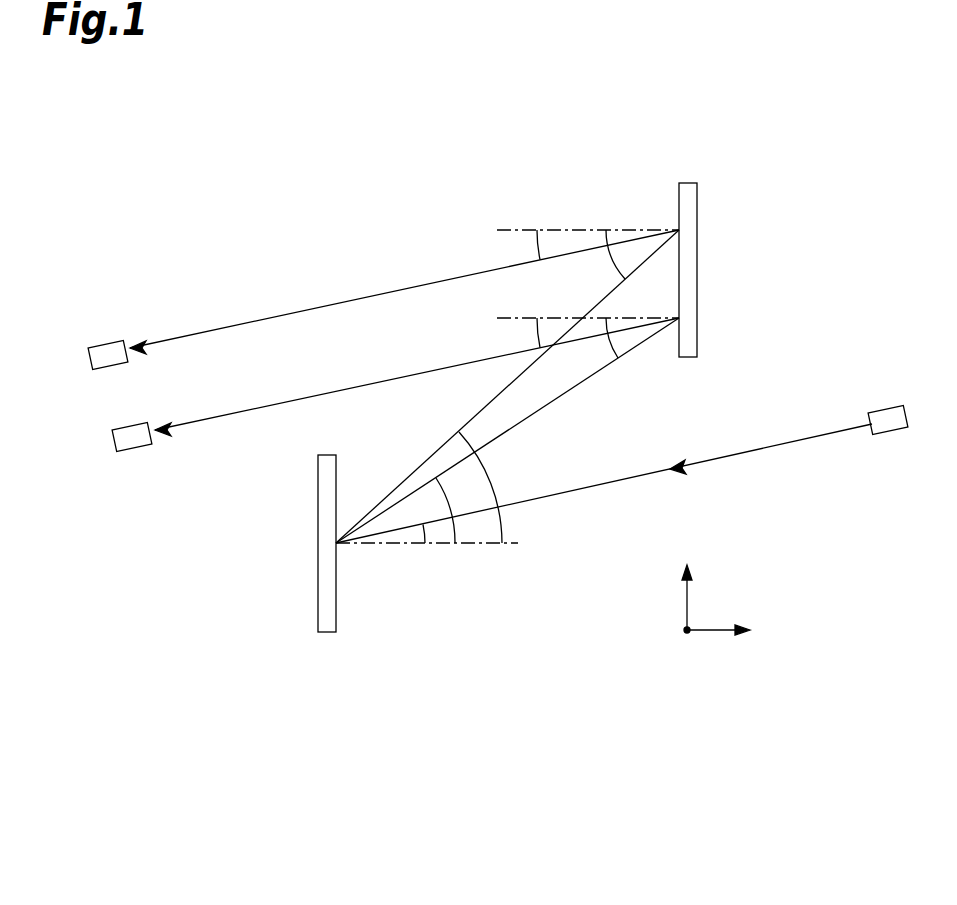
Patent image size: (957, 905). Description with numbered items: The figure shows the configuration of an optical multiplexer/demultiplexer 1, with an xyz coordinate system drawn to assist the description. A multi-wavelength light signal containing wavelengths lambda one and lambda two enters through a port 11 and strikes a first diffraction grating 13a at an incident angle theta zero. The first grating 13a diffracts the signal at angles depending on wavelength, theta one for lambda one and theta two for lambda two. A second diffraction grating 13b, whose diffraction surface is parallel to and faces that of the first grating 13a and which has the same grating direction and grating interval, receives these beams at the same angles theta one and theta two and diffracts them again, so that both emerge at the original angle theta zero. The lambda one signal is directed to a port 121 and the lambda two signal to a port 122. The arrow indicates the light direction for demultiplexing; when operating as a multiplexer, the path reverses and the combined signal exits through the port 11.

The optical multiplexer/demultiplexer 1 is at (321, 117).
The port 11 is at (890, 432).
The port 121 is at (133, 450).
The port 122 is at (105, 345).
The first diffraction grating 13a is at (340, 603).
The second diffraction grating 13b is at (679, 198).